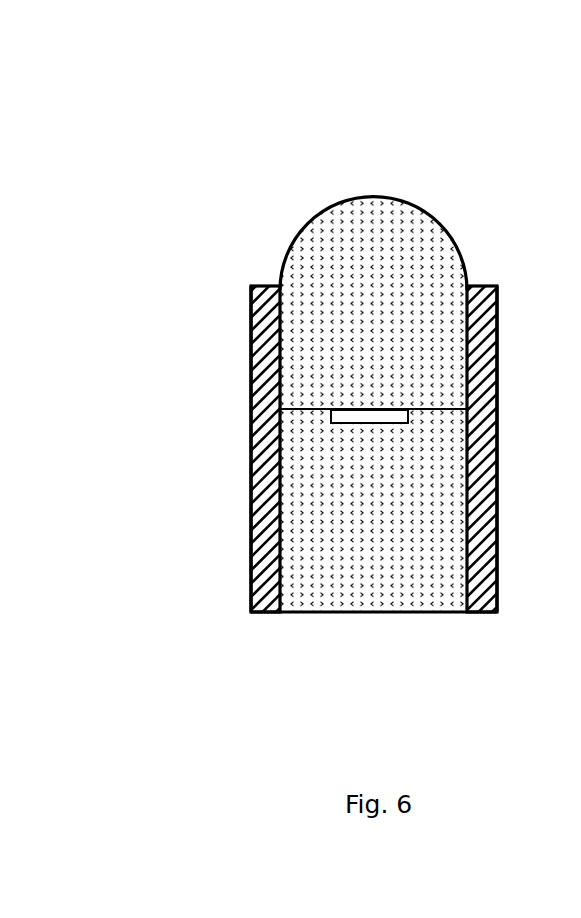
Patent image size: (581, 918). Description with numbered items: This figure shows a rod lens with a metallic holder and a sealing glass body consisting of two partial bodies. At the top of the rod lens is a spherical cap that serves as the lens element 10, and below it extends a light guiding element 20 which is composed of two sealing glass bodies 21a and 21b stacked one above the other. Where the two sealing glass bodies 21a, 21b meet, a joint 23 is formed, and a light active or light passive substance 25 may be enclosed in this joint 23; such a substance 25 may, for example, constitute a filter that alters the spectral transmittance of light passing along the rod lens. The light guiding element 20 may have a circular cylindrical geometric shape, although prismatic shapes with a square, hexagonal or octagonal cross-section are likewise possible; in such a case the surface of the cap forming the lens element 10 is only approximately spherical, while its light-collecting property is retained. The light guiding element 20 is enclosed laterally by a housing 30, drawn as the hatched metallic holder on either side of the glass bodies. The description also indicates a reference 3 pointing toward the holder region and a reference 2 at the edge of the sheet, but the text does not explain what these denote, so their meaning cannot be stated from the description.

The lens element 10 is at (398, 238).
The housing 30 is at (244, 333).
The housing 3 is at (275, 369).
The joint 23 is at (282, 412).
The light active or light passive substance 25 is at (357, 425).
The sealing glass body 21a is at (427, 377).
The sealing glass body 21b is at (427, 505).
The light guiding element 20 is at (338, 629).
The device 2 is at (539, 449).